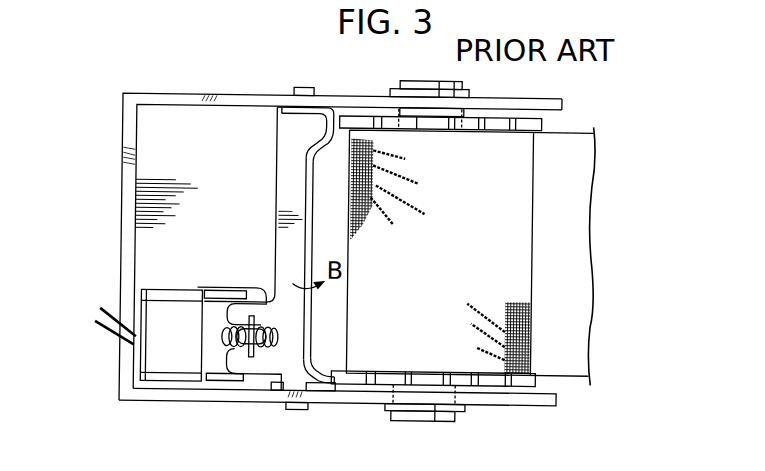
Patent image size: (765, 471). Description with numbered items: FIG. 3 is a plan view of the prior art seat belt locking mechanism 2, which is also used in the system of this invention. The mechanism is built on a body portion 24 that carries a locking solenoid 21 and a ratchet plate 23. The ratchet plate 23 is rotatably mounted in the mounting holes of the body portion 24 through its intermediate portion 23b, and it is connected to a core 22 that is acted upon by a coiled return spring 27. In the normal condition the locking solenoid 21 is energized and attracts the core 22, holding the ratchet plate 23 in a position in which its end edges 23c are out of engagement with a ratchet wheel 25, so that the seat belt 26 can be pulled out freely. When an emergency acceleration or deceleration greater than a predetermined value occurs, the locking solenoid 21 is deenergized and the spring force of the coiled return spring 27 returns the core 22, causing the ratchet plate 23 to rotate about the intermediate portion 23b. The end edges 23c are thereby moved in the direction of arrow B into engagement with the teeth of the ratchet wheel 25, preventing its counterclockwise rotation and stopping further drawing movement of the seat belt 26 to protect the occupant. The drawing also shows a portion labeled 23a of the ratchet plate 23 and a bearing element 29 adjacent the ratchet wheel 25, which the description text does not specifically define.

The seat belt locking mechanism 2 is at (160, 236).
The locking solenoid 21 is at (150, 358).
The core 22 is at (266, 345).
The ratchet plate 23 is at (274, 168).
The spring retaining portion of bracket 23a is at (236, 358).
The intermediate portion 23b is at (295, 88).
The end edges 23c is at (318, 122).
The body portion 24 is at (283, 395).
The ratchet wheel 25 is at (495, 380).
The seat belt 26 is at (517, 196).
The coiled return spring 27 is at (223, 339).
The bearing 29 is at (462, 81).